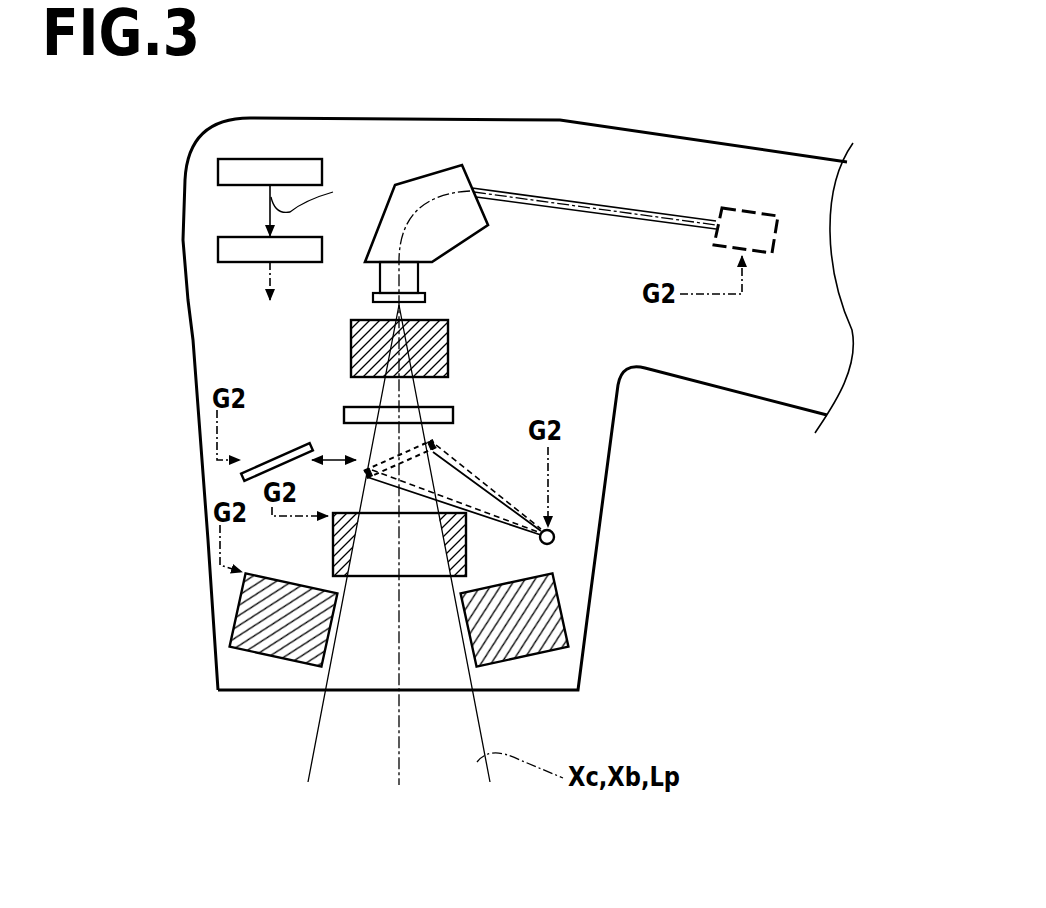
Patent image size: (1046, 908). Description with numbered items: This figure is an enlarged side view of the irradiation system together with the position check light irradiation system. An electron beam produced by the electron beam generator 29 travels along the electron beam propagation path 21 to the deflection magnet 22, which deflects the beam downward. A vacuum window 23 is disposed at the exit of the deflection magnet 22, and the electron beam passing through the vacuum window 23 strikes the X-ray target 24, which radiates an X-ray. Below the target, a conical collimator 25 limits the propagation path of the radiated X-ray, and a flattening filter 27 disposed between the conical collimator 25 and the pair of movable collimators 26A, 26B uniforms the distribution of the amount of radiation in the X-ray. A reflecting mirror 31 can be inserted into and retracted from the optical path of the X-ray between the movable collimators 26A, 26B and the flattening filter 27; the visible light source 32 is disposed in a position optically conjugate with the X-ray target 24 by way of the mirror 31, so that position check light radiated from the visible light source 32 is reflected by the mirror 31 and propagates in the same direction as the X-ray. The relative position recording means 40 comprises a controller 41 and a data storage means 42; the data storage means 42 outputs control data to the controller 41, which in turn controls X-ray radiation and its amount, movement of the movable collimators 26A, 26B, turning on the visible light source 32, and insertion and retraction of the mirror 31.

The relative position recording means 40 is at (125, 155).
The controller 41 is at (218, 258).
The data storage means 42 is at (218, 181).
The electron beam propagation path 21 is at (562, 197).
The deflection magnet 22 is at (443, 180).
The vacuum window 23 is at (403, 287).
The X-ray target 24 is at (410, 303).
The conical collimator 25 is at (442, 356).
The flattening filter 27 is at (445, 412).
The electron beam generator 29 is at (735, 207).
The reflecting mirror 31 is at (274, 455).
The visible light source 32 is at (555, 536).
The movable collimator 26A is at (465, 532).
The movable collimator 26B is at (267, 637).